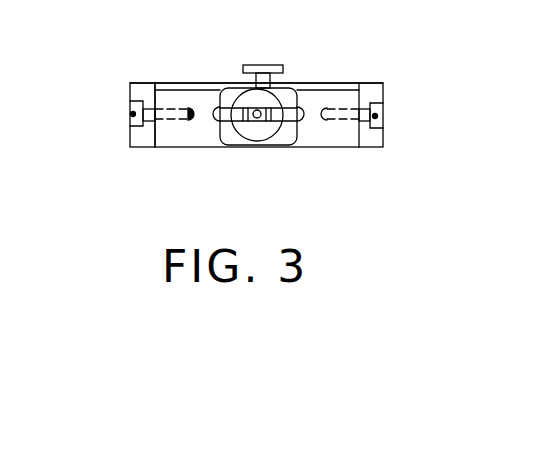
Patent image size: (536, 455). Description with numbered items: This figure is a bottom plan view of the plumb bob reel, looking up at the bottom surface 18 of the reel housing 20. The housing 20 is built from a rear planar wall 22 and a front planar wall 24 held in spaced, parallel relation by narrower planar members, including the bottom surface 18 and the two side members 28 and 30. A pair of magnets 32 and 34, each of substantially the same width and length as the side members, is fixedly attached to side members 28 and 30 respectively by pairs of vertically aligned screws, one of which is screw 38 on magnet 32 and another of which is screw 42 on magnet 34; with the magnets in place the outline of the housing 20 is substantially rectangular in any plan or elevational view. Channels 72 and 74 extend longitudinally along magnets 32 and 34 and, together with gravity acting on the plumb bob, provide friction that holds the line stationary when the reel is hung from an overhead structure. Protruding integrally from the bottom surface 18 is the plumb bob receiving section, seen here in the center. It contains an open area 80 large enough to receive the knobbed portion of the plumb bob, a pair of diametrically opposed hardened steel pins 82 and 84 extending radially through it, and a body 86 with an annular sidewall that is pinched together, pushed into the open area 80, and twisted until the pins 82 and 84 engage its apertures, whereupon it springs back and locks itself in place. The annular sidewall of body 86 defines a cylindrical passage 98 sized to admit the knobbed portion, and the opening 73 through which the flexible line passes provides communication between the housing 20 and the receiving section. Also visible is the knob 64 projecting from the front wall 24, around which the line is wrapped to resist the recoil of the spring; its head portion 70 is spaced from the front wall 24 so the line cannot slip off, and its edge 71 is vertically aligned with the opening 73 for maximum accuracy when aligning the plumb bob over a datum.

The bottom surface 18 is at (167, 133).
The reel housing 20 is at (350, 148).
The rear planar wall 22 is at (327, 83).
The front planar wall 24 is at (297, 147).
The side member 28 is at (155, 90).
The side member 30 is at (360, 91).
The magnet 32 is at (143, 138).
The magnet 34 is at (372, 137).
The screw 38 is at (130, 104).
The screw 42 is at (378, 117).
The knob 64 is at (288, 78).
The head portion 70 is at (262, 65).
The edge 71 is at (237, 83).
The channel 72 is at (131, 114).
The opening 73 is at (258, 119).
The channel 74 is at (392, 117).
The open area 80 is at (224, 137).
The hardened steel pin 82 is at (218, 98).
The hardened steel pin 84 is at (303, 108).
The body 86 is at (298, 142).
The cylindrical passage 98 is at (247, 134).